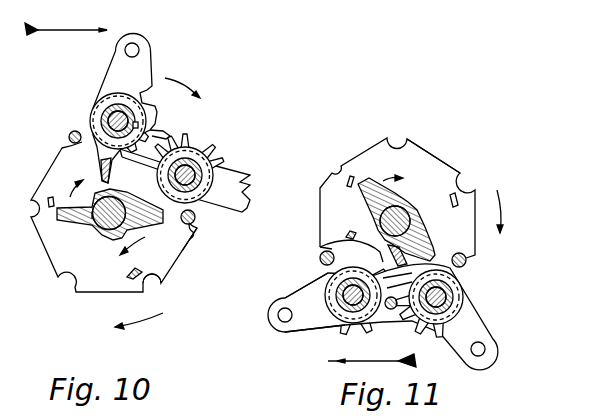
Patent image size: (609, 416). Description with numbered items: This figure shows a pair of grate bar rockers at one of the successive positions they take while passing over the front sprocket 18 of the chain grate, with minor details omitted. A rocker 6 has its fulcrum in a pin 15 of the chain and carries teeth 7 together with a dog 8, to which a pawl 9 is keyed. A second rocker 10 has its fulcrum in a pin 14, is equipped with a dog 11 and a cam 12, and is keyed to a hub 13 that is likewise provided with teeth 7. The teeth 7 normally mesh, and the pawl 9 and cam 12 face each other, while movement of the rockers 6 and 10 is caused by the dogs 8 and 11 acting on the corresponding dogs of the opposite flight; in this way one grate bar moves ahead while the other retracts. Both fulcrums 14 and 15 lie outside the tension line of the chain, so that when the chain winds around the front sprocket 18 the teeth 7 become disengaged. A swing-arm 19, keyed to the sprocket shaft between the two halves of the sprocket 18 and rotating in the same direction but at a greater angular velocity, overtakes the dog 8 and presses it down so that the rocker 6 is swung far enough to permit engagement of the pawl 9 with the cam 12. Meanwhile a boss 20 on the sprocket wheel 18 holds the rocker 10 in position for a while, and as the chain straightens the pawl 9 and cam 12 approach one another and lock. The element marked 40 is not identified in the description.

In FIG. 10, the rocker 6 is at (115, 68).
In FIG. 11, the rocker 6 is at (474, 318).
In FIG. 10, the teeth 7 is at (258, 122).
In FIG. 11, the teeth 7 is at (372, 360).
In FIG. 10, the dog 8 is at (99, 174).
In FIG. 11, the dog 8 is at (383, 247).
In FIG. 10, the pawl 9 is at (167, 129).
In FIG. 11, the pawl 9 is at (413, 330).
In FIG. 10, the rocker 10 is at (240, 178).
In FIG. 11, the rocker 10 is at (286, 350).
In FIG. 10, the dog 11 is at (112, 172).
In FIG. 11, the dog 11 is at (397, 255).
In FIG. 10, the cam 12 is at (200, 125).
In FIG. 11, the cam 12 is at (379, 330).
In FIG. 10, the hub 13 is at (214, 197).
In FIG. 11, the hub 13 is at (391, 303).
In FIG. 10, the pin 14 is at (210, 158).
In FIG. 11, the pin 14 is at (429, 303).
In FIG. 10, the pin 15 is at (103, 111).
In FIG. 11, the pin 15 is at (353, 295).
In FIG. 10, the front sprocket 18 is at (180, 251).
In FIG. 11, the front sprocket 18 is at (441, 161).
In FIG. 10, the swing-arm 19 is at (62, 225).
In FIG. 11, the swing-arm 19 is at (367, 180).
In FIG. 10, the boss 20 is at (163, 279).
In FIG. 11, the boss 20 is at (320, 247).
In FIG. 10, the stop pin 40 is at (69, 134).